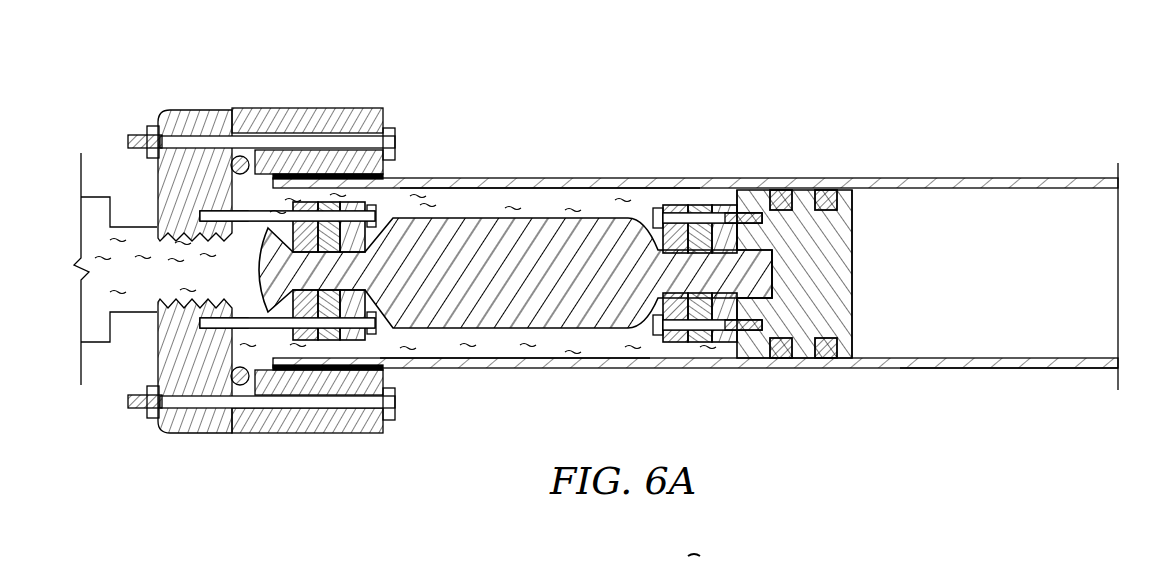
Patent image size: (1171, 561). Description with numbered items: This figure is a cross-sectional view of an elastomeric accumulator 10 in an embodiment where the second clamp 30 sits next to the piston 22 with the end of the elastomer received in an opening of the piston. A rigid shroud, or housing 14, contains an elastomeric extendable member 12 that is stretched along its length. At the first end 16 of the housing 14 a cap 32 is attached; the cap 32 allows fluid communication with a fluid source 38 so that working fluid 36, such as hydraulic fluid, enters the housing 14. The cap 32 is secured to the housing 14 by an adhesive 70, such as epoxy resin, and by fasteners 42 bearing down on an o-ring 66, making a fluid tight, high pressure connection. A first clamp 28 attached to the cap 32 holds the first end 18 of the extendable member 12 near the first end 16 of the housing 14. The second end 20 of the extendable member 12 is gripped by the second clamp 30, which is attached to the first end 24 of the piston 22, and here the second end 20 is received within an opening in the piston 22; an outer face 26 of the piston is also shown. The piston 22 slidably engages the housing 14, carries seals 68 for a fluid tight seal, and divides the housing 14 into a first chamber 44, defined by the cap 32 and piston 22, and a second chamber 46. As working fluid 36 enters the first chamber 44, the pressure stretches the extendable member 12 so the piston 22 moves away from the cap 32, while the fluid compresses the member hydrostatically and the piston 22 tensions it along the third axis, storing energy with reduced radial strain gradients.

The accumulator 10 is at (981, 77).
The extendable member 12 is at (508, 320).
The housing 14 is at (545, 180).
The first end of the housing 16 is at (262, 132).
The first end of the extendable member 18 is at (262, 400).
The second end of the extendable member 20 is at (743, 300).
The piston 22 is at (840, 325).
The first end of the piston 24 is at (735, 195).
The end cap outer face 26 is at (852, 207).
The first clamp 28 is at (375, 185).
The second clamp 30 is at (697, 207).
The cap 32 is at (237, 110).
The working fluid 36 is at (405, 345).
The fluid source 38 is at (95, 208).
The fasteners 42 is at (250, 213).
The first chamber 44 is at (566, 188).
The second chamber 46 is at (1003, 345).
The o-ring 66 is at (237, 163).
The seals 68 is at (783, 200).
The adhesive 70 is at (340, 150).